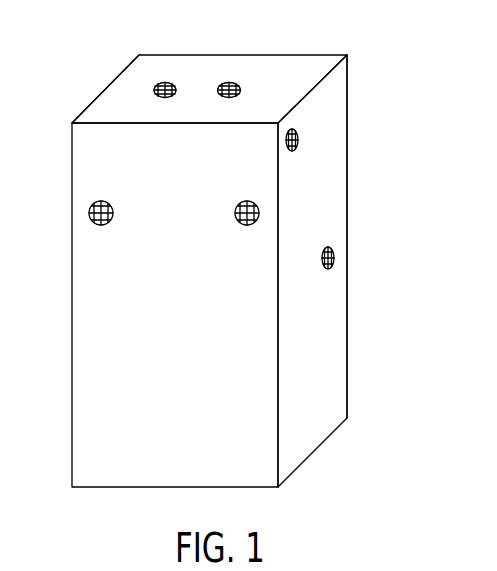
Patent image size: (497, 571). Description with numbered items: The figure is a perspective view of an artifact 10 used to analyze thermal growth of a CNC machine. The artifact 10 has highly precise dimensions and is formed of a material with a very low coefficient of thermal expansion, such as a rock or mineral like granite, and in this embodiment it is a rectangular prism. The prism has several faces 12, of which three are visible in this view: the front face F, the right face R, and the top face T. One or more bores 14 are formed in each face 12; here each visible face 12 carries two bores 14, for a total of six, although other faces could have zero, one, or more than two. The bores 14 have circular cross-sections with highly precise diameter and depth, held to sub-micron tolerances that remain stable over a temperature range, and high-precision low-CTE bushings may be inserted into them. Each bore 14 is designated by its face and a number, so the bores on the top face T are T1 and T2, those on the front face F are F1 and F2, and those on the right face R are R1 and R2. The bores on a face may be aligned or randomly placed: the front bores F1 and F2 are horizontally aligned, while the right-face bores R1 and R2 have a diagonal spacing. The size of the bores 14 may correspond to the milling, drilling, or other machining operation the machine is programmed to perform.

The artifact 10 is at (423, 85).
The faces 12 is at (78, 138).
The bores 14 is at (230, 82).
The top face T is at (290, 70).
The front face F is at (90, 290).
The right face R is at (328, 322).
The first top bore T1 is at (158, 83).
The second top bore T2 is at (234, 84).
The first front bore F1 is at (90, 214).
The second front bore F2 is at (262, 212).
The first right bore R1 is at (300, 138).
The second right bore R2 is at (337, 262).